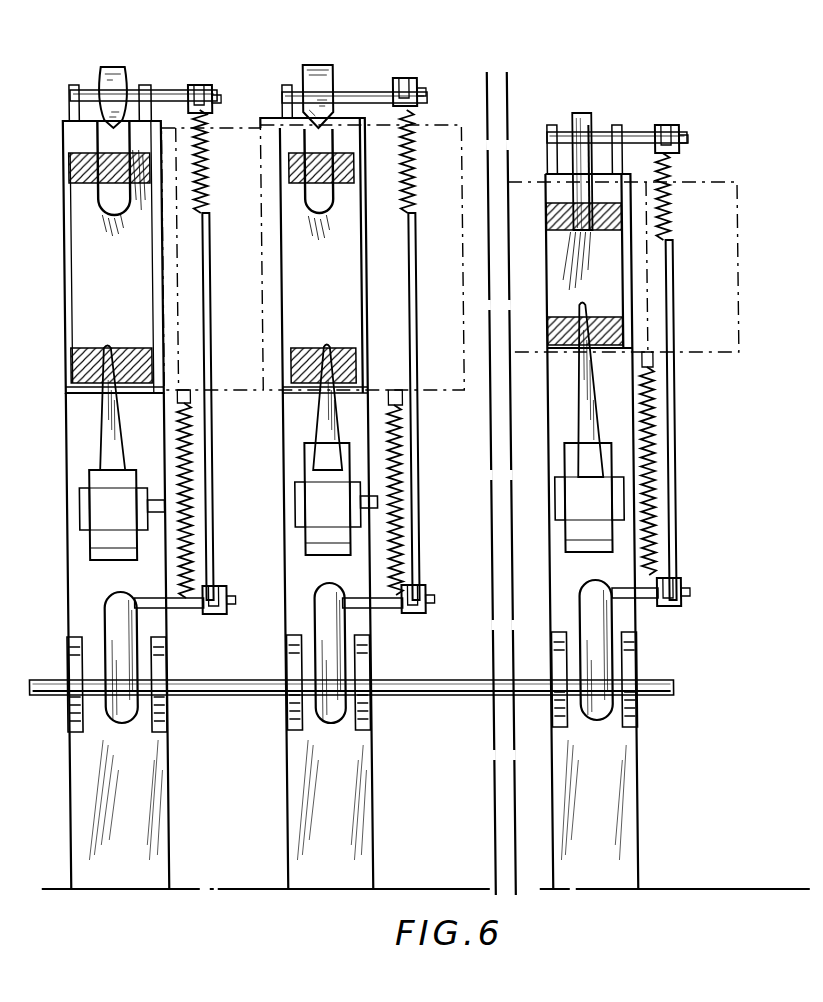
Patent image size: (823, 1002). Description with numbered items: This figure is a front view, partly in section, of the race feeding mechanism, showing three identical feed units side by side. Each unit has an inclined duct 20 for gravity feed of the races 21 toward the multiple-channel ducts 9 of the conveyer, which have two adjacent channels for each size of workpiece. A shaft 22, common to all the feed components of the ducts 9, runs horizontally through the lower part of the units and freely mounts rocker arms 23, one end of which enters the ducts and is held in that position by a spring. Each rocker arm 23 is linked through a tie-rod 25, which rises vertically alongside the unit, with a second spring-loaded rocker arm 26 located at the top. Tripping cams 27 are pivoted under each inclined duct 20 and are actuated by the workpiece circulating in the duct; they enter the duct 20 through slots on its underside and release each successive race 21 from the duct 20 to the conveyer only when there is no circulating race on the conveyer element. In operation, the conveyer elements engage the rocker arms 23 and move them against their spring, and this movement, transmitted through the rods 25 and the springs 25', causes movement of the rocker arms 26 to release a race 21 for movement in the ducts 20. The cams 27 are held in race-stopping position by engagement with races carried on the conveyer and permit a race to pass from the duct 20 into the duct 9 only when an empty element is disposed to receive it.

The multiple-channel duct 9 is at (125, 860).
The inclined duct 20 is at (77, 140).
The race 21 is at (125, 130).
The shaft 22 is at (35, 690).
The rocker arm 23 is at (125, 708).
The tie-rod 25 is at (468, 406).
The spring 25' is at (457, 175).
The second spring-loaded rocker arm 26 is at (117, 95).
The tripping cam 27 is at (115, 492).